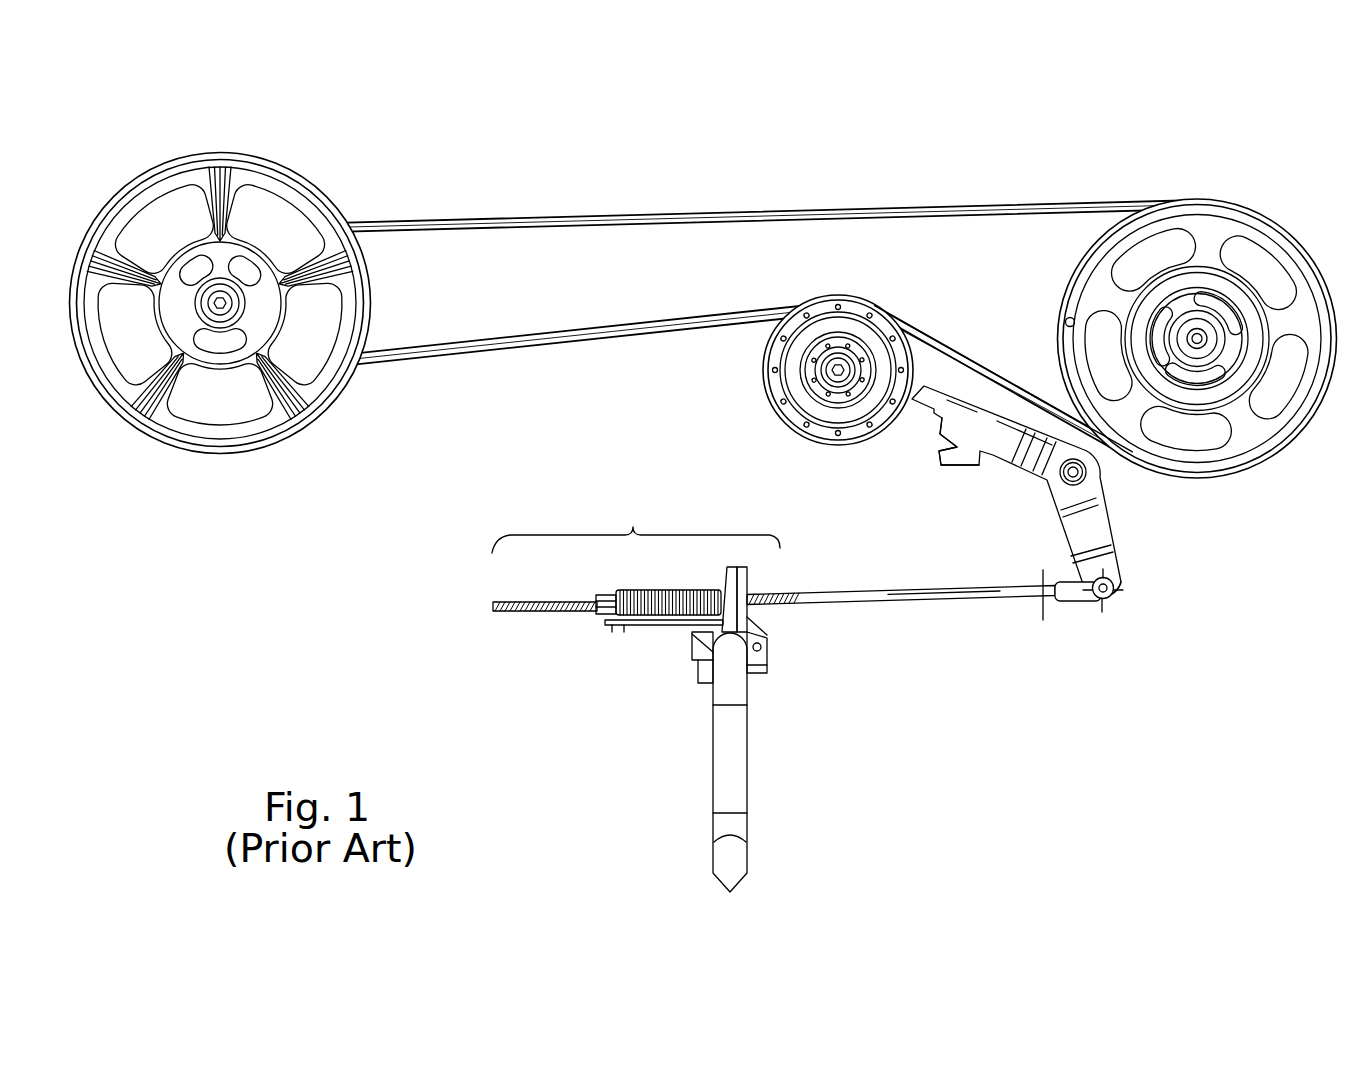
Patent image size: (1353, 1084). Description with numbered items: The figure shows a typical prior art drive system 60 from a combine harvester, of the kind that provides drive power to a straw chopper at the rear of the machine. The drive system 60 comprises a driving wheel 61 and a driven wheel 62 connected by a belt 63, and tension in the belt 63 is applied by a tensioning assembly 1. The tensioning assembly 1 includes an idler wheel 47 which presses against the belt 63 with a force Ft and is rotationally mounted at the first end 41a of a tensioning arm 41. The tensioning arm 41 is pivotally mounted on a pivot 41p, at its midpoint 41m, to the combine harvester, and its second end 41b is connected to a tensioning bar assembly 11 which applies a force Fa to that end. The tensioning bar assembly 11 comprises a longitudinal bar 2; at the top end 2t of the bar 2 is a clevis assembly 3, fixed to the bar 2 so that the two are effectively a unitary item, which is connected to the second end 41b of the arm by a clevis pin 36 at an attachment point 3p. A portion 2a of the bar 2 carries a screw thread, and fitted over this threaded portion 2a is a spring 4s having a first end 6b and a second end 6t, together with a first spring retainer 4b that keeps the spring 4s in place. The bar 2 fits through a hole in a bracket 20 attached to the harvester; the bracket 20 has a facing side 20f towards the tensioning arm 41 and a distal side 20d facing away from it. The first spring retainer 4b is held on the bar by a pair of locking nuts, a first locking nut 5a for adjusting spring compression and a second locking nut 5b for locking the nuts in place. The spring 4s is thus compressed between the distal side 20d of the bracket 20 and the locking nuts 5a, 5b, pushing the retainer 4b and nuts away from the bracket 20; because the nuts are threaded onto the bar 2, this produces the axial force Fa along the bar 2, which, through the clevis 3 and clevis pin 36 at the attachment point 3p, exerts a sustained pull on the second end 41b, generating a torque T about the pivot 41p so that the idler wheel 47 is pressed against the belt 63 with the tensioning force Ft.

The tensioning assembly 1 is at (1135, 757).
The longitudinal bar 2 is at (888, 597).
The threaded portion of the bar 2a is at (636, 524).
The top end of the bar 2t is at (1067, 612).
The clevis assembly 3 is at (1092, 602).
The attachment point 3p is at (1112, 596).
The first spring retainer 4b is at (608, 623).
The spring 4s is at (655, 623).
The first locking nut 5a is at (610, 592).
The second locking nut 5b is at (600, 594).
The first end of the spring 6b is at (618, 630).
The second end of the spring 6t is at (693, 618).
The tensioning bar assembly 11 is at (827, 618).
The bracket 20 is at (760, 650).
The distal side of bracket 20d is at (727, 567).
The facing side of bracket 20f is at (750, 577).
The clevis pin 36 is at (1093, 604).
The tensioning arm 41 is at (1095, 535).
The first end of the tensioning arm 41a is at (915, 313).
The second end of the tensioning arm 41b is at (1114, 590).
The midpoint of the tensioning arm 41m is at (1025, 485).
The pivot 41p is at (1090, 480).
The idler wheel 47 is at (798, 302).
The drive system 60 is at (380, 522).
The driving wheel 61 is at (1152, 218).
The driven wheel 62 is at (293, 180).
The belt 63 is at (731, 209).
The tensioning force Ft is at (868, 297).
The axial force Fa is at (1010, 625).
The torque T is at (1120, 473).